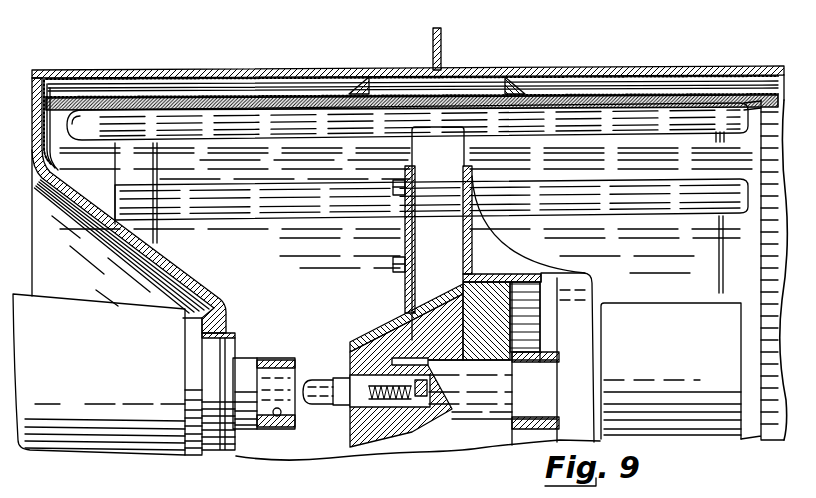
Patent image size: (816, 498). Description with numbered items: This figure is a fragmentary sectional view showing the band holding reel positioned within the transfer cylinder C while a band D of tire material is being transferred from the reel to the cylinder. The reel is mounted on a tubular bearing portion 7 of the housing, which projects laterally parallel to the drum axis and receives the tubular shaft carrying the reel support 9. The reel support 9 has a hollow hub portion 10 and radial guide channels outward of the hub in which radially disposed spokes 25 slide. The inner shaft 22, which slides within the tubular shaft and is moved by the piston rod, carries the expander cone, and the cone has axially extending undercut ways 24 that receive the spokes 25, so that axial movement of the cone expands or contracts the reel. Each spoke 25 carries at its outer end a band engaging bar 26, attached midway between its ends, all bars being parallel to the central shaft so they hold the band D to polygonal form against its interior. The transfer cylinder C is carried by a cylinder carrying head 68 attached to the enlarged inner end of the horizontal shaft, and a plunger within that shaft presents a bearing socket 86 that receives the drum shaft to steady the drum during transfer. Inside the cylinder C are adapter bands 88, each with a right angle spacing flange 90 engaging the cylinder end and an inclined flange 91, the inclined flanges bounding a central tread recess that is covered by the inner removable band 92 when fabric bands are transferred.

The spacing flange 90 is at (65, 74).
The adapter band 88 is at (284, 91).
The spacing flange 91 is at (353, 78).
The inner removable band 92 is at (478, 93).
The transfer cylinder C is at (248, 74).
The band of tire material D is at (621, 93).
The band engaging bar 26 is at (713, 128).
The cylinder carrying head 68 is at (76, 230).
The spoke 25 is at (425, 242).
The undercut way 24 is at (385, 338).
The reel support 9 is at (352, 330).
The inner shaft 22 is at (478, 406).
The hollow hub portion 10 is at (575, 292).
The tubular bearing portion 7 is at (644, 313).
The bearing socket 86 is at (279, 424).